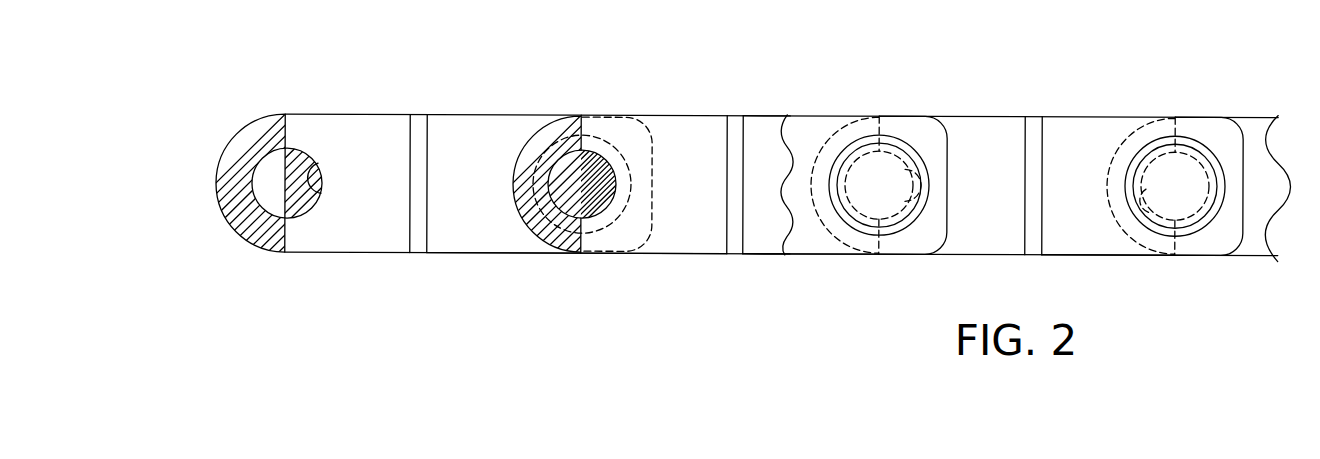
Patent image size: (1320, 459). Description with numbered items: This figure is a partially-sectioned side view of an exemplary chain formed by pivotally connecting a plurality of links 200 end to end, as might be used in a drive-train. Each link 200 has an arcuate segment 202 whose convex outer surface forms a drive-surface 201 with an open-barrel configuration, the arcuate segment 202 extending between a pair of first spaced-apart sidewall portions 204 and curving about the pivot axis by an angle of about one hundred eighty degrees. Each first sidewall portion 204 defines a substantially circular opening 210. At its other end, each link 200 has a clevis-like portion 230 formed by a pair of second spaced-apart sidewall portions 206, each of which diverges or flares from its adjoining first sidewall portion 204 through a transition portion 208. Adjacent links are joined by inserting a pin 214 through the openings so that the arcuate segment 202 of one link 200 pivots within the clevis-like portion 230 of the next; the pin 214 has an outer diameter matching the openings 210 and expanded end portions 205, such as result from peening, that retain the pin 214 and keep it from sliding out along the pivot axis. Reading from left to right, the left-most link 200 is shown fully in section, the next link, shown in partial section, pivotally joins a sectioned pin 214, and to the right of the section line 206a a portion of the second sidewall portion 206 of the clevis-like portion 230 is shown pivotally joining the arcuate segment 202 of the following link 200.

The chain link 200 is at (407, 84).
The drive-surface 201 is at (213, 136).
The arcuate segment 202 is at (240, 220).
The first sidewall portion 204 is at (390, 233).
The expanded end portion 205 is at (617, 145).
The second sidewall portion 206 is at (773, 239).
The section line 206a is at (781, 211).
The transition portion 208 is at (420, 155).
The circular opening 210 is at (322, 170).
The pin 214 is at (592, 198).
The clevis-like portion 230 is at (655, 192).